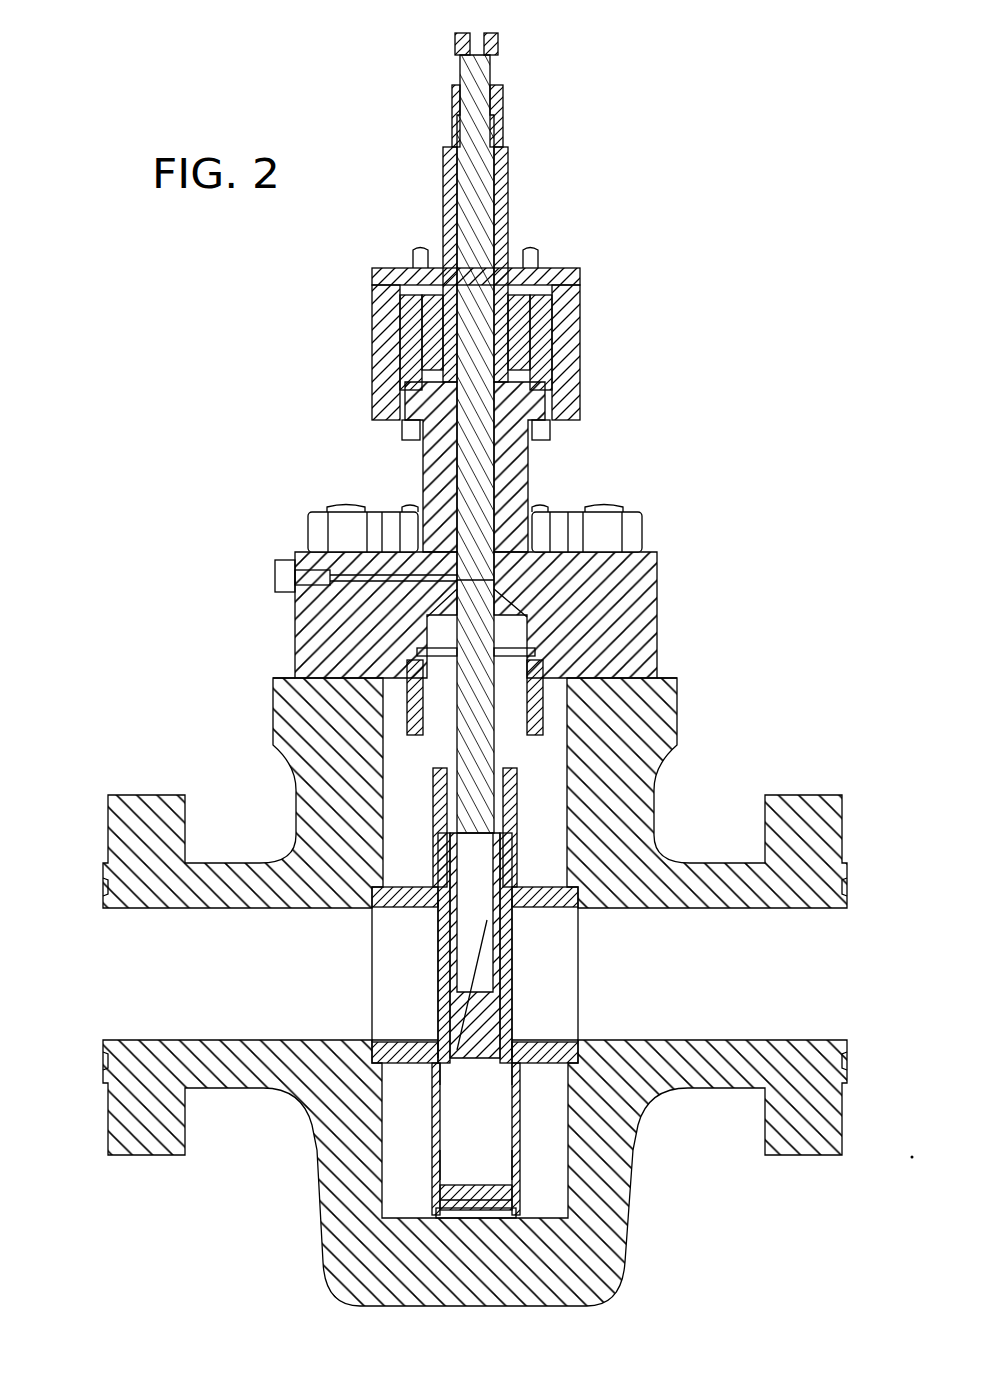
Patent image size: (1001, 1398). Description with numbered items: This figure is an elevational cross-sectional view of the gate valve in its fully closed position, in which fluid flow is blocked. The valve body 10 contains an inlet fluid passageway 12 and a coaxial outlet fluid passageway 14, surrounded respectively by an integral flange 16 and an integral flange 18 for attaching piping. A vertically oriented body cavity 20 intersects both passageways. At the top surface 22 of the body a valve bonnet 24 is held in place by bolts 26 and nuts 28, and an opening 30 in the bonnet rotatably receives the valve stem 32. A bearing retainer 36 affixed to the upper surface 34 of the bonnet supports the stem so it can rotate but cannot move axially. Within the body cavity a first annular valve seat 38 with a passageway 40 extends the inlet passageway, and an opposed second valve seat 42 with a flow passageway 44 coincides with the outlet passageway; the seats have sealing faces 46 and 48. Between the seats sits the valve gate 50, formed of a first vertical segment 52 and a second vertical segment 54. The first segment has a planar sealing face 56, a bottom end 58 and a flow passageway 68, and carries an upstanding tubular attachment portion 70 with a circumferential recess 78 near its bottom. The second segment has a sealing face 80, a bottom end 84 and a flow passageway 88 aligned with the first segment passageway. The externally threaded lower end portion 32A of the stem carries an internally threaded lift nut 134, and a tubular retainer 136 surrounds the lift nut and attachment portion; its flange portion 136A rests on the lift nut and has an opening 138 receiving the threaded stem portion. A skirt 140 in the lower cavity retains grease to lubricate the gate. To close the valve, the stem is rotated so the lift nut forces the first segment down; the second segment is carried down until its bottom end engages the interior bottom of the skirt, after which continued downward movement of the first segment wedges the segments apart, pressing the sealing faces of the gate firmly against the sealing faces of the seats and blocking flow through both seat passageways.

The body 10 is at (285, 727).
The inlet fluid passageway 12 is at (150, 1040).
The outlet fluid passageway 14 is at (775, 1040).
The flange 16 is at (150, 796).
The flange 18 is at (806, 796).
The body cavity 20 is at (382, 795).
The top surface 22 is at (632, 669).
The valve bonnet 24 is at (652, 580).
The bolts 26 is at (352, 506).
The nuts 28 is at (320, 530).
The opening 30 is at (505, 526).
The valve stem 32 is at (480, 228).
The lower end portion of the valve stem 32A is at (470, 741).
The upper surface 34 is at (580, 340).
The bearing retainer 36 is at (578, 330).
The first annular valve seat 38 is at (385, 898).
The passageway 40 is at (400, 1041).
The second valve seat 42 is at (540, 905).
The flow passageway 44 is at (550, 1018).
The sealing face 46 is at (441, 1080).
The sealing face 48 is at (506, 1085).
The valve gate 50 is at (545, 968).
The first vertical segment 52 is at (436, 980).
The second vertical segment 54 is at (500, 958).
The first segment sealing face 56 is at (438, 945).
The bottom end 58 is at (462, 1211).
The flow passageway 68 is at (452, 1172).
The tubular attachment portion 70 is at (305, 870).
The circumferential recess 78 is at (522, 886).
The sealing face 80 is at (555, 996).
The bottom end 84 is at (480, 1213).
The flow passageway 88 is at (492, 1195).
The lift nut 134 is at (540, 772).
The tubular retainer 136 is at (356, 762).
The flange portion 136A is at (610, 782).
The opening 138 is at (620, 768).
The skirt 140 is at (440, 1200).